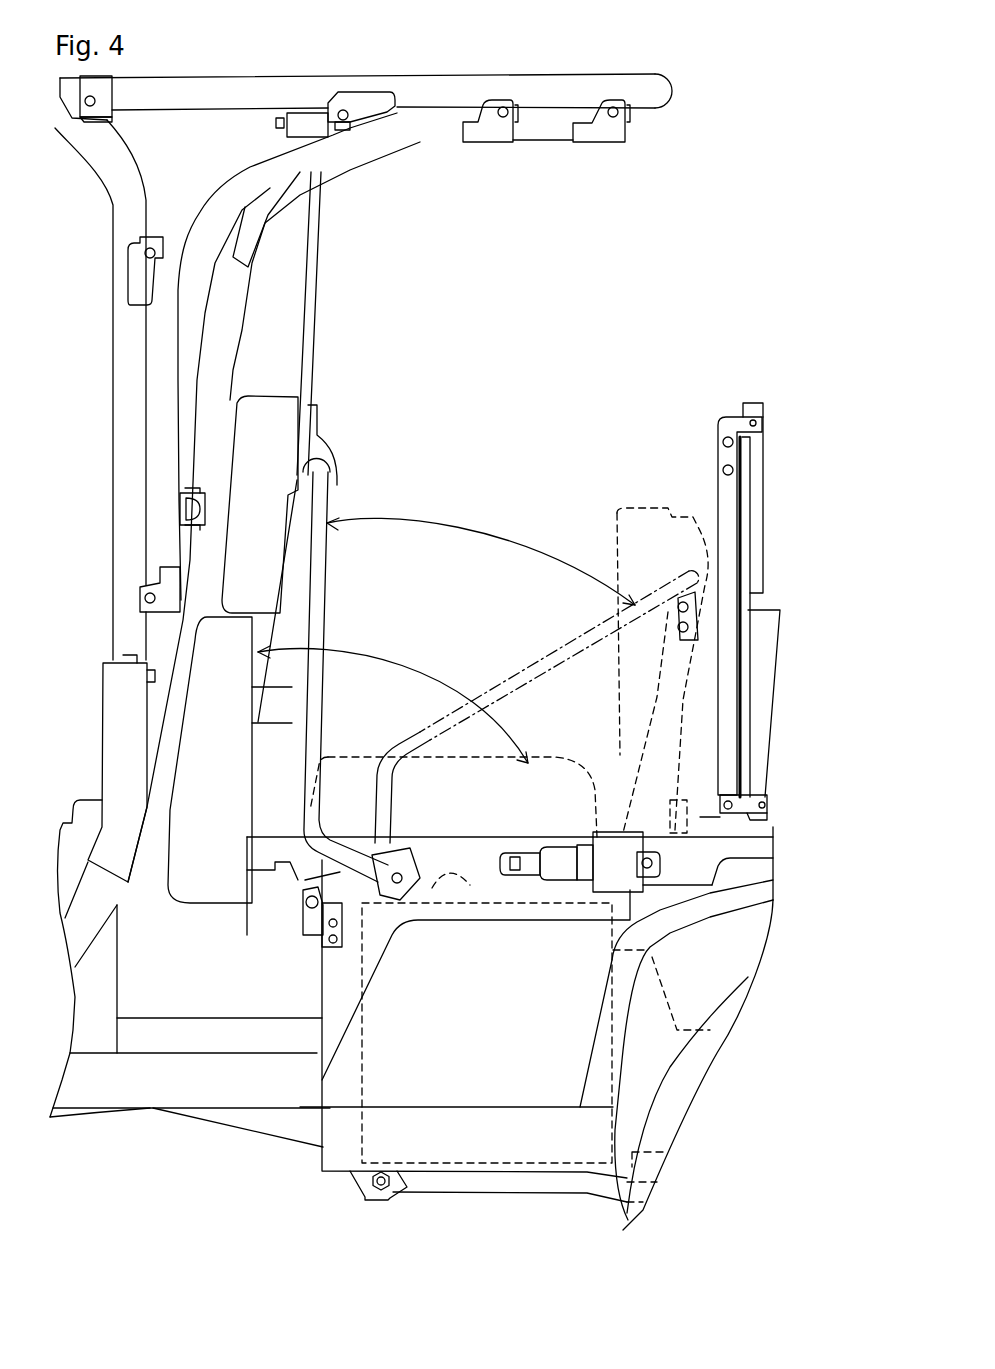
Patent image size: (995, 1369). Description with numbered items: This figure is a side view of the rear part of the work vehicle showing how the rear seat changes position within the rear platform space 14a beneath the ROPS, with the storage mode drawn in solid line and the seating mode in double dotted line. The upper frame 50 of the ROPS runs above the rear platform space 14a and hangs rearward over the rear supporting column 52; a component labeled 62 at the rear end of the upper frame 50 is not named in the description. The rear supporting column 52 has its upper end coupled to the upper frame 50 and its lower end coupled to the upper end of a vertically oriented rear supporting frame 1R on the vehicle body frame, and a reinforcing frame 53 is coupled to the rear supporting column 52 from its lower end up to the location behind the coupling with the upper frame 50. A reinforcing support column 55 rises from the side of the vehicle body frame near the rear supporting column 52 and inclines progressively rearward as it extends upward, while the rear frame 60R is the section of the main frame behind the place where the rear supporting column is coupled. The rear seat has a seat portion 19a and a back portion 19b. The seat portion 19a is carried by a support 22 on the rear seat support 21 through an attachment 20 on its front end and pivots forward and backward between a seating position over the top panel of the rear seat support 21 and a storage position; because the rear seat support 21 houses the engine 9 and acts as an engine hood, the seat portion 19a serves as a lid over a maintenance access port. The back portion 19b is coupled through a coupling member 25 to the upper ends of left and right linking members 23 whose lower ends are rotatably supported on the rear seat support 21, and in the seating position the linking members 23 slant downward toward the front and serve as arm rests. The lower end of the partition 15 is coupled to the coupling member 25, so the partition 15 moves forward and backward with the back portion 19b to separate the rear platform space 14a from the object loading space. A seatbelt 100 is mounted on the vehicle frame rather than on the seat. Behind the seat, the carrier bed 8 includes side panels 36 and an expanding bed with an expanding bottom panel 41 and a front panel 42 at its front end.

The roof bar end 62 is at (680, 88).
The rear frame 60R is at (175, 100).
The upper frame 50 is at (668, 108).
The reinforcing frame 53 is at (160, 393).
The rear supporting column 52 is at (122, 272).
The reinforcing support column 55 is at (220, 340).
The partition 15 is at (313, 248).
The rear platform space 14a is at (493, 373).
The back portion 19b is at (270, 447).
The coupling member 25 is at (316, 449).
The linking member 23 is at (310, 590).
The carrier bed 8 is at (752, 405).
The expanding bottom panel 41 is at (727, 497).
The front panel 42 is at (757, 480).
The side panel 36 is at (767, 637).
The rear supporting frame 1R is at (113, 732).
The seat portion 19a is at (185, 890).
The attachment 20 is at (273, 860).
The support 22 is at (317, 933).
The engine 9 is at (450, 870).
The seatbelt 100 is at (563, 870).
The rear seat support 21 is at (473, 1082).